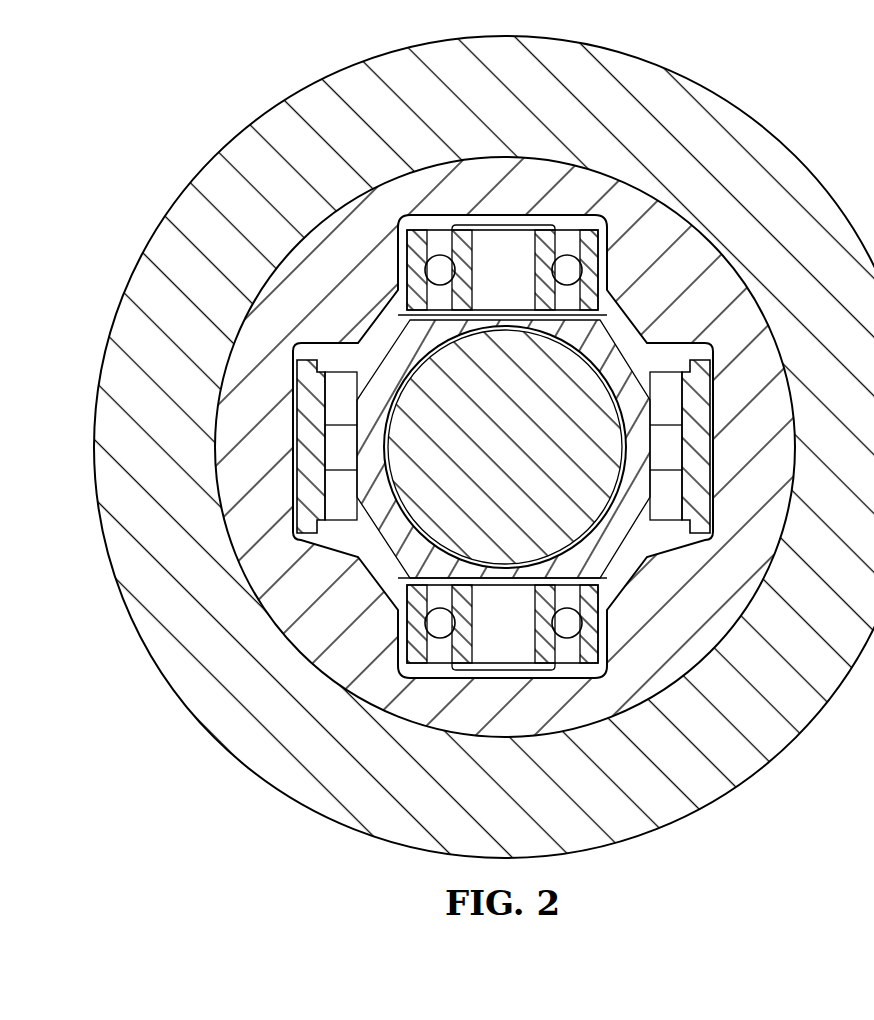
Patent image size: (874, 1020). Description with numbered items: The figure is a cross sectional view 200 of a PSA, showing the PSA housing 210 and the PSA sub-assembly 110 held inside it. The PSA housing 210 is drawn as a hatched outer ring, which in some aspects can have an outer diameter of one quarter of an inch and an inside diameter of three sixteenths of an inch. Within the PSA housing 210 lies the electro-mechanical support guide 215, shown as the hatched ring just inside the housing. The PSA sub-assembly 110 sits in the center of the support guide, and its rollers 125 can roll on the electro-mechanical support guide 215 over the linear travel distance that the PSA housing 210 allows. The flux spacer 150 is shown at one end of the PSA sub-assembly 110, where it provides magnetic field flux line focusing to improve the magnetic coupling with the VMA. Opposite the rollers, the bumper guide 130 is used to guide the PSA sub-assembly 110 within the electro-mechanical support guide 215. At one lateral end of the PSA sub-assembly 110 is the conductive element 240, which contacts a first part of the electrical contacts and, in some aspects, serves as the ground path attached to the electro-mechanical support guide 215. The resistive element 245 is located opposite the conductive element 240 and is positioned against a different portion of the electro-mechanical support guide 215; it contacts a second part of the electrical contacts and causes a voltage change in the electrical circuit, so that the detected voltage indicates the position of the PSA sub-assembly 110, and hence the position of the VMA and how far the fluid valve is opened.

The cross sectional view 200 is at (143, 87).
The PSA housing 210 is at (302, 98).
The electro-mechanical support guide 215 is at (723, 278).
The PSA sub-assembly 110 is at (381, 341).
The rollers 125 is at (563, 230).
The bumper guide 130 is at (515, 658).
The flux spacer 150 is at (526, 463).
The conductive element 240 is at (300, 438).
The resistive element 245 is at (714, 458).